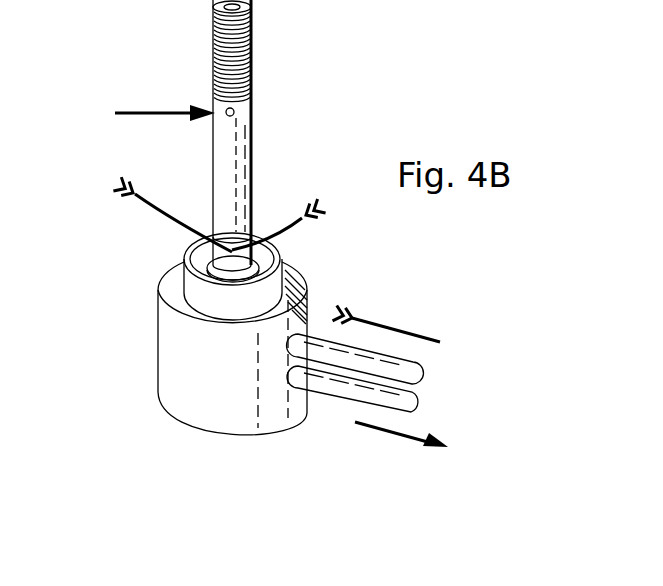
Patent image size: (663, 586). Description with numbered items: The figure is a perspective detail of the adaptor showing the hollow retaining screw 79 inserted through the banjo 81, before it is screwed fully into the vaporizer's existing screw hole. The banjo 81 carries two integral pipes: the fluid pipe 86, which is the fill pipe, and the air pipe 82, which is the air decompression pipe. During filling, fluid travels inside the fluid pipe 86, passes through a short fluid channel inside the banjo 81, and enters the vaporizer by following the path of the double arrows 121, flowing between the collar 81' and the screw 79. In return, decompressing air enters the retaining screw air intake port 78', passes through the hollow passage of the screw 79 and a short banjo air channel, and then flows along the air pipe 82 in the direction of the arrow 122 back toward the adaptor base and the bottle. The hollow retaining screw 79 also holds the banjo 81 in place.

The hollow retaining screw 79 is at (186, 150).
The retaining screw air intake port 78' is at (277, 114).
The banjo 81 is at (202, 348).
The collar 81' is at (202, 278).
The fluid pipe 86 is at (313, 345).
The air pipe 82 is at (320, 378).
The double arrows 121 is at (165, 222).
The arrow 122 is at (150, 112).